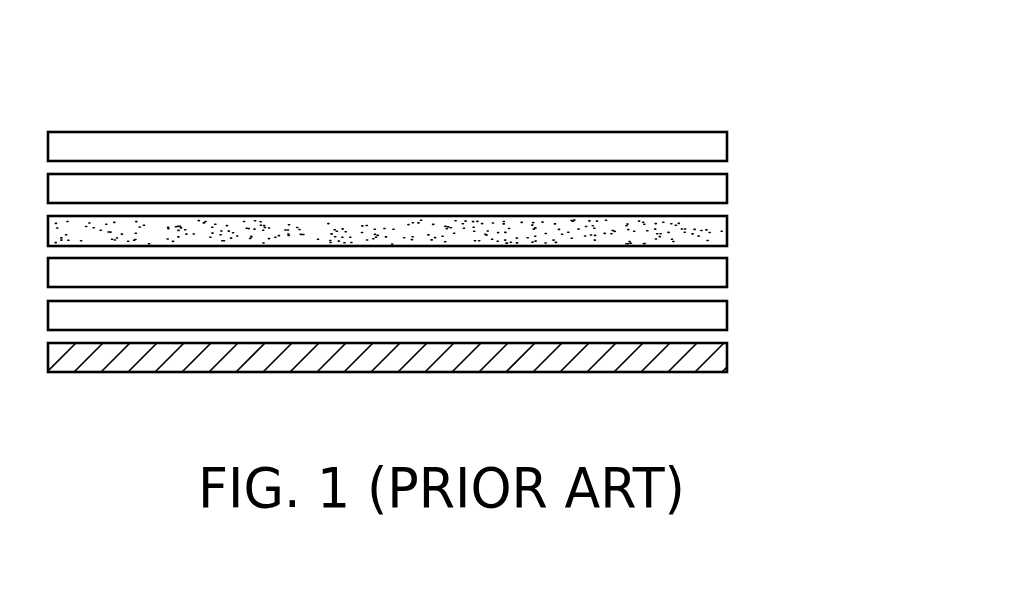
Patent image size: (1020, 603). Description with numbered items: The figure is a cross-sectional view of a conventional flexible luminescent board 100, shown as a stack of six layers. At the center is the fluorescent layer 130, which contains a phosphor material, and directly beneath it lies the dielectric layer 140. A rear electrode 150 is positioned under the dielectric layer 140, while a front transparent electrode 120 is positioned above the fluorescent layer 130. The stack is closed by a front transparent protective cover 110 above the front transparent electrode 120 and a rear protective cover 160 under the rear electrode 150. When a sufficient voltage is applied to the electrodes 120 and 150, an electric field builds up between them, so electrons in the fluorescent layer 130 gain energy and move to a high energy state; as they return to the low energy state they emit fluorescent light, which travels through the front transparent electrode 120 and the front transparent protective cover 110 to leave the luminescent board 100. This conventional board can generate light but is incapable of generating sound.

The flexible luminescent board 100 is at (781, 54).
The front transparent protective cover 110 is at (727, 147).
The front transparent electrode 120 is at (727, 189).
The fluorescent layer 130 is at (727, 231).
The dielectric layer 140 is at (727, 273).
The rear electrode 150 is at (727, 316).
The rear protective cover 160 is at (727, 358).